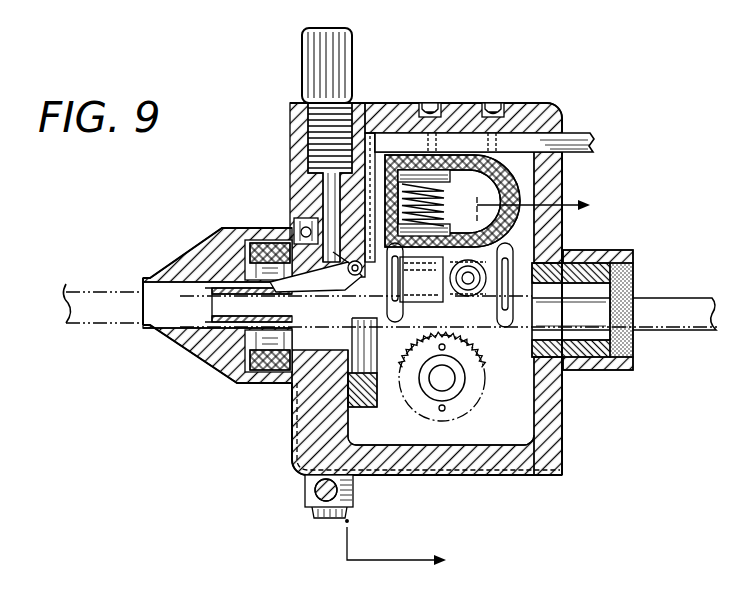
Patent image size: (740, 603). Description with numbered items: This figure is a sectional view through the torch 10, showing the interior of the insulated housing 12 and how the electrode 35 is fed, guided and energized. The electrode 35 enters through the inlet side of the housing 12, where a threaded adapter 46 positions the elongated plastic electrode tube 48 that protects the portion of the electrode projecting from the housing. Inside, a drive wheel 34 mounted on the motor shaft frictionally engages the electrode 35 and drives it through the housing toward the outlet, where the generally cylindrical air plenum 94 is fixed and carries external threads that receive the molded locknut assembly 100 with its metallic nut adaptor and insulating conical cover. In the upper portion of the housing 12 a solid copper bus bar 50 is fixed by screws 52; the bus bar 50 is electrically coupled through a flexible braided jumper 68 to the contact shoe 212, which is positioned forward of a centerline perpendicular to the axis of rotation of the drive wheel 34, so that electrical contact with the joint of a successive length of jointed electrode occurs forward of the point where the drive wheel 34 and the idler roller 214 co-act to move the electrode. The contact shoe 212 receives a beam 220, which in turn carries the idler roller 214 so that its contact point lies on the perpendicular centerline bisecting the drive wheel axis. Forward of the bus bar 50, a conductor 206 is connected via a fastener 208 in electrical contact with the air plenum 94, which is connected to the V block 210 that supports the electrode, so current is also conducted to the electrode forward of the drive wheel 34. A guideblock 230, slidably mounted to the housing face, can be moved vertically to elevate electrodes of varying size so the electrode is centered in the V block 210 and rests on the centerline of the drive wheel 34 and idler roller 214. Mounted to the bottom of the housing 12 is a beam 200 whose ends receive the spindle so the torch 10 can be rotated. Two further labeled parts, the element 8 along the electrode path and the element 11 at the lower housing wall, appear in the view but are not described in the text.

The shaft 8 is at (520, 301).
The torch 10 is at (482, 384).
The housing base 11 is at (292, 432).
The housing 12 is at (556, 425).
The drive wheel 34 is at (477, 392).
The electrode 35 is at (92, 291).
The adapter 46 is at (578, 371).
The electrode tube 48 is at (635, 348).
The bus bar 50 is at (570, 135).
The screws 52 is at (493, 103).
The flexible braided jumper 68 is at (520, 190).
The air plenum 94 is at (292, 398).
The molded locknut assembly 100 is at (206, 237).
The beam 200 is at (300, 481).
The conductor 206 is at (368, 131).
The fastener 208 is at (298, 218).
The V block 210 is at (306, 309).
The contact shoe 212 is at (412, 304).
The idler roller 214 is at (488, 294).
The beam 220 is at (492, 262).
The guideblock 230 is at (372, 408).